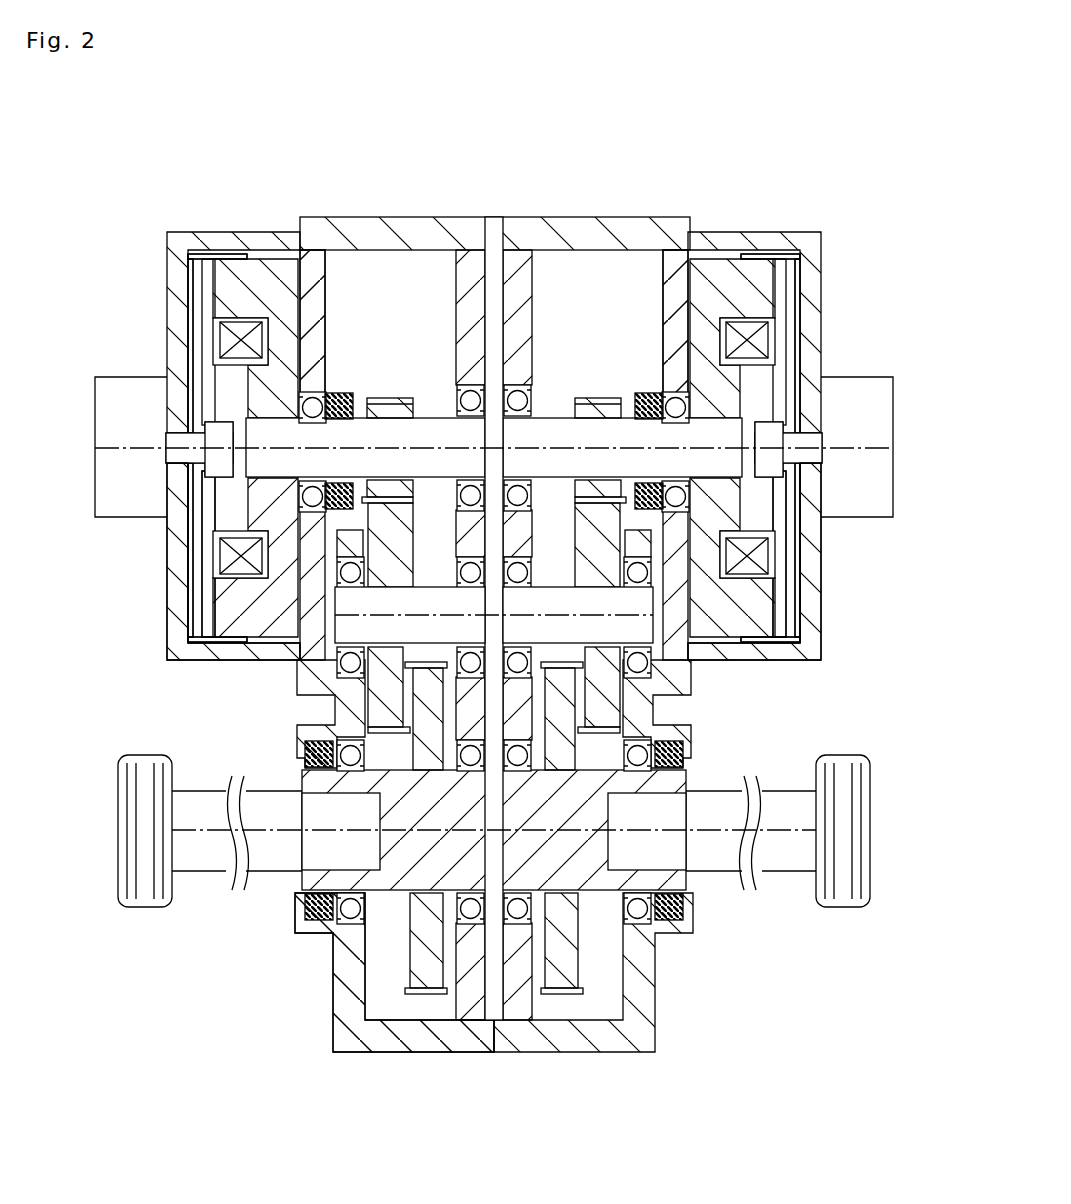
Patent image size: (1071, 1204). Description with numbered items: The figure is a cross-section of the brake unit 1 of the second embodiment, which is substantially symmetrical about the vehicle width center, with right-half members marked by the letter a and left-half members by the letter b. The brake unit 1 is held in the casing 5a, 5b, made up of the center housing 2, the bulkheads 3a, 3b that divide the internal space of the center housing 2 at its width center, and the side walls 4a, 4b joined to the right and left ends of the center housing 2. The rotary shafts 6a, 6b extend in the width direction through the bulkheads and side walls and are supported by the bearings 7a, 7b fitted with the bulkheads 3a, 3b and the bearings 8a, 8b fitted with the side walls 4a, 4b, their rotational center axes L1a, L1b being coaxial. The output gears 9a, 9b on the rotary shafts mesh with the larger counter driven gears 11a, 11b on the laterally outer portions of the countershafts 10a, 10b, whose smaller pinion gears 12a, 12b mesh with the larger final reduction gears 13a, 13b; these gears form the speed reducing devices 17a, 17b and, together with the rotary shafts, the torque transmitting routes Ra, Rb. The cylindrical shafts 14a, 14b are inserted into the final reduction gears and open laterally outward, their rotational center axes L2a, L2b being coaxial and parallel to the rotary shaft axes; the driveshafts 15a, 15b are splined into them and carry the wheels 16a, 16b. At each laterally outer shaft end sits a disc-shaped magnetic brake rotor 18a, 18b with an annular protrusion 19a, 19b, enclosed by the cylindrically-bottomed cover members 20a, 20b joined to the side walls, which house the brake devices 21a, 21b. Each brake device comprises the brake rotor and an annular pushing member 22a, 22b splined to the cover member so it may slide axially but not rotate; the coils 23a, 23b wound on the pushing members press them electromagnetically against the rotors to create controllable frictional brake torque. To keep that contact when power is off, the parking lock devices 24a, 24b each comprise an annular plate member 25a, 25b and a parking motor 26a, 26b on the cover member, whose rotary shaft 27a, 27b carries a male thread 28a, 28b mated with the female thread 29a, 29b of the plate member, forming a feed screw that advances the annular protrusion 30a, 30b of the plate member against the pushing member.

The brake unit 1 is at (103, 999).
The center housing 2 is at (494, 232).
The bulkhead 3a is at (518, 290).
The bulkhead 3b is at (470, 292).
The side wall 4a is at (650, 261).
The side wall 4b is at (315, 282).
The casing 5a is at (668, 173).
The casing 5b is at (335, 181).
The rotary shaft 6a is at (556, 430).
The rotary shaft 6b is at (434, 430).
The bearing 7a is at (530, 496).
The bearing 7b is at (458, 496).
The bearing 8a is at (662, 400).
The bearing 8b is at (328, 400).
The output gear 9a is at (598, 404).
The output gear 9b is at (390, 404).
The countershaft 10a is at (662, 672).
The countershaft 10b is at (330, 672).
The counter driven gear 11a is at (592, 546).
The counter driven gear 11b is at (392, 540).
The pinion gear 12a is at (640, 572).
The pinion gear 12b is at (350, 572).
The final reduction gear 13a is at (565, 956).
The final reduction gear 13b is at (425, 956).
The cylindrical shaft 14a is at (682, 884).
The cylindrical shaft 14b is at (305, 878).
The driveshaft 15a is at (790, 866).
The driveshaft 15b is at (200, 870).
The wheel 16a is at (840, 758).
The wheel 16b is at (136, 906).
The speed reducing device 17a is at (746, 722).
The speed reducing device 17b is at (264, 722).
The brake rotor 18a is at (712, 258).
The brake rotor 18b is at (285, 258).
The annular protrusion 19a is at (745, 256).
The annular protrusion 19b is at (240, 256).
The cover member 20a is at (800, 290).
The cover member 20b is at (190, 290).
The brake device 21a is at (832, 197).
The brake device 21b is at (135, 203).
The pushing member 22a is at (770, 264).
The pushing member 22b is at (218, 264).
The electromagnetic coil 23a is at (748, 342).
The electromagnetic coil 23b is at (240, 342).
The parking lock device 24a is at (902, 550).
The parking lock device 24b is at (90, 584).
The plate member 25a is at (780, 600).
The plate member 25b is at (210, 600).
The parking motor 26a is at (880, 490).
The parking motor 26b is at (100, 392).
The rotary shaft of parking motor 27a is at (768, 445).
The rotary shaft of parking motor 27b is at (220, 442).
The male thread 28a is at (795, 410).
The male thread 28b is at (195, 490).
The female thread 29a is at (783, 442).
The female thread 29b is at (205, 455).
The annular protrusion 30a is at (775, 645).
The annular protrusion 30b is at (215, 645).
The torque transmitting route Ra is at (590, 270).
The torque transmitting route Rb is at (372, 270).
The rotational center axis L1a is at (726, 460).
The rotational center axis L1b is at (262, 460).
The rotational center axis L2a is at (688, 826).
The rotational center axis L2b is at (300, 826).